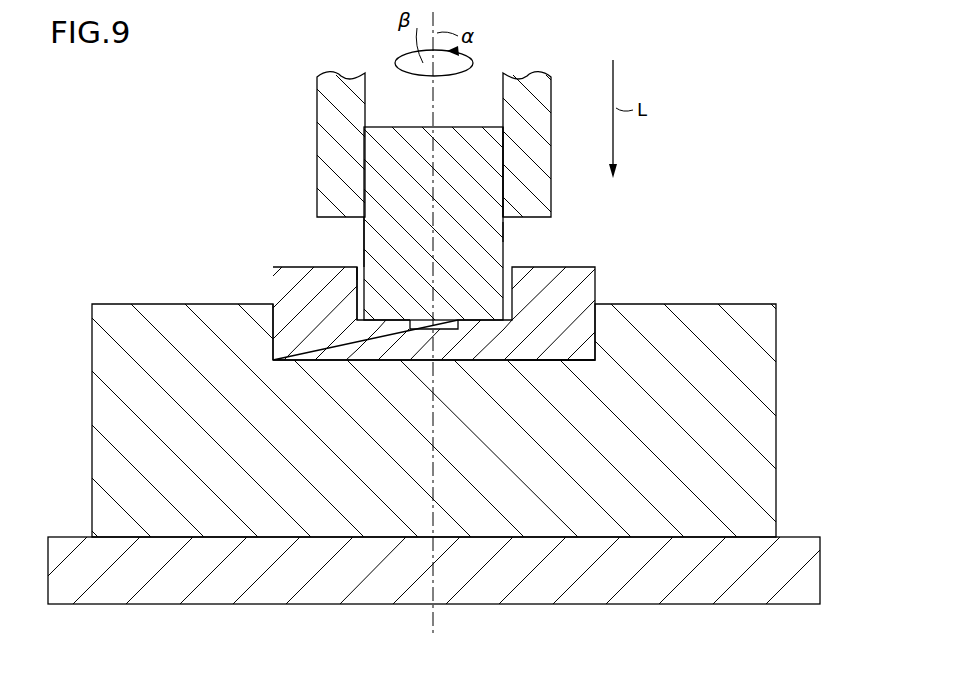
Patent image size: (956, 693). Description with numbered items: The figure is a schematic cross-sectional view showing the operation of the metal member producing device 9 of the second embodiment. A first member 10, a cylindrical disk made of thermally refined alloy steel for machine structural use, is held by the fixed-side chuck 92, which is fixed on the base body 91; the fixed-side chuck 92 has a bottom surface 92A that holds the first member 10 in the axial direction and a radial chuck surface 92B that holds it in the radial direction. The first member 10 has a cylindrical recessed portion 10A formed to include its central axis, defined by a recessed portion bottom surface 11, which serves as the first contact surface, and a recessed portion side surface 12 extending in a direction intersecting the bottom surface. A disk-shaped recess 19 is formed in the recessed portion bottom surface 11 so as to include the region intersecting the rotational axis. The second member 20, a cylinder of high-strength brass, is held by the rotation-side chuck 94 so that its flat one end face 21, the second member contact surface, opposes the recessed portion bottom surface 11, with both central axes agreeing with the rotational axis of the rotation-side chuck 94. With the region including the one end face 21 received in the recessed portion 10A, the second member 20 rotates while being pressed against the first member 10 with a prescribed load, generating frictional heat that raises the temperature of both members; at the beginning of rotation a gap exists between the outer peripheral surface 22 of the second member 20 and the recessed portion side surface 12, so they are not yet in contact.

The metal member producing device 9 is at (706, 62).
The first member 10 is at (582, 280).
The recessed portion 10A is at (354, 260).
The recessed portion bottom surface 11 is at (357, 262).
The recessed portion side surface 12 is at (376, 300).
The recess 19 is at (505, 232).
The second member 20 is at (488, 251).
The one end face 21 is at (398, 332).
The outer peripheral surface 22 is at (505, 222).
The base body 91 is at (752, 588).
The fixed-side chuck 92 is at (733, 433).
The bottom surface 92A is at (499, 341).
The radial chuck surface 92B is at (275, 323).
The rotation-side chuck 94 is at (537, 103).